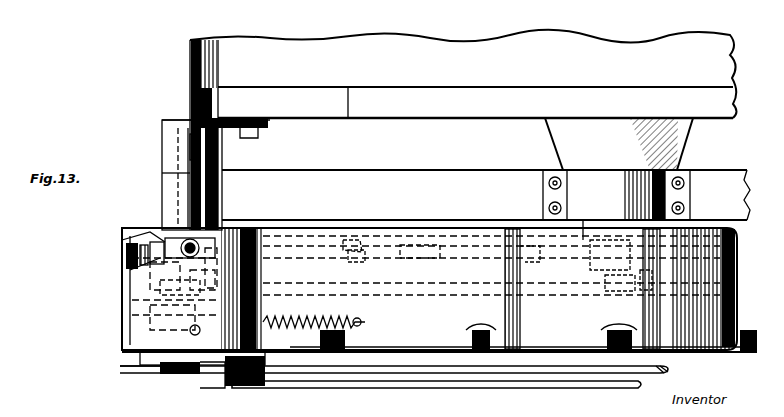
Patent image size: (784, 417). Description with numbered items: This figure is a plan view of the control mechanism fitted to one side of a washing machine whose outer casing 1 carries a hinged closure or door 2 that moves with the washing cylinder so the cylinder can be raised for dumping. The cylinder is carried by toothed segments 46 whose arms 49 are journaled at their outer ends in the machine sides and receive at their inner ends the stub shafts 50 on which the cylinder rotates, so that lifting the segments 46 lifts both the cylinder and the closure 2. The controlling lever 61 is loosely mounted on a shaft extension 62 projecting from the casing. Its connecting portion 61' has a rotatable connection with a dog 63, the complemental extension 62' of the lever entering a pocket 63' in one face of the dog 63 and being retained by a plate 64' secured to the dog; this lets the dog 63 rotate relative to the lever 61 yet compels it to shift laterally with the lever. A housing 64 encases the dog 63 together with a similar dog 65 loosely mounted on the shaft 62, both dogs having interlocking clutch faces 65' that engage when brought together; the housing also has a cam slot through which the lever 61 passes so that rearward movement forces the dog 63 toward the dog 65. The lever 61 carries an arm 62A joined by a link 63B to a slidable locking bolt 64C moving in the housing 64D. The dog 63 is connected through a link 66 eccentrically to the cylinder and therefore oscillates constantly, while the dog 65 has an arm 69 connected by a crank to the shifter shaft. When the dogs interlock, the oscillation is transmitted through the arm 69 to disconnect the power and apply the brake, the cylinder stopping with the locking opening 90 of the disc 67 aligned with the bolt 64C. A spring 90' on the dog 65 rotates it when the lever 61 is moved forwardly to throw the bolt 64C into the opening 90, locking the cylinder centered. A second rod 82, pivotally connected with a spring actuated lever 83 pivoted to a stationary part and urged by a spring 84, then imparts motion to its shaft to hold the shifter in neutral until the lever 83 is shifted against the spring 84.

The outer casing 1 is at (300, 112).
The hinged closure or door 2 is at (190, 62).
The segments 46 is at (486, 188).
The arms of the segments 49 is at (535, 183).
The stub shafts 50 is at (610, 270).
The controlling lever 61 is at (175, 229).
The connecting portion 61' is at (139, 230).
The shaft extension 62 is at (171, 386).
The complemental extension 62' is at (115, 280).
The arm 62A is at (240, 228).
The dog 63 is at (426, 290).
The pocket 63' is at (176, 288).
The link 63B is at (327, 258).
The housing 64 is at (581, 368).
The plate 64' is at (126, 248).
The slidable locking bolt 64C is at (366, 262).
The housing 64D is at (423, 237).
The dog 65 is at (178, 357).
The interlocking clutch faces 65' is at (175, 330).
The link 66 is at (420, 275).
The disc 67 is at (583, 232).
The arm 69 is at (492, 389).
The second rod 82 is at (352, 374).
The spring actuated lever 83 is at (128, 376).
The spring 84 is at (182, 386).
The locking opening 90 is at (537, 281).
The spring 90' is at (314, 325).